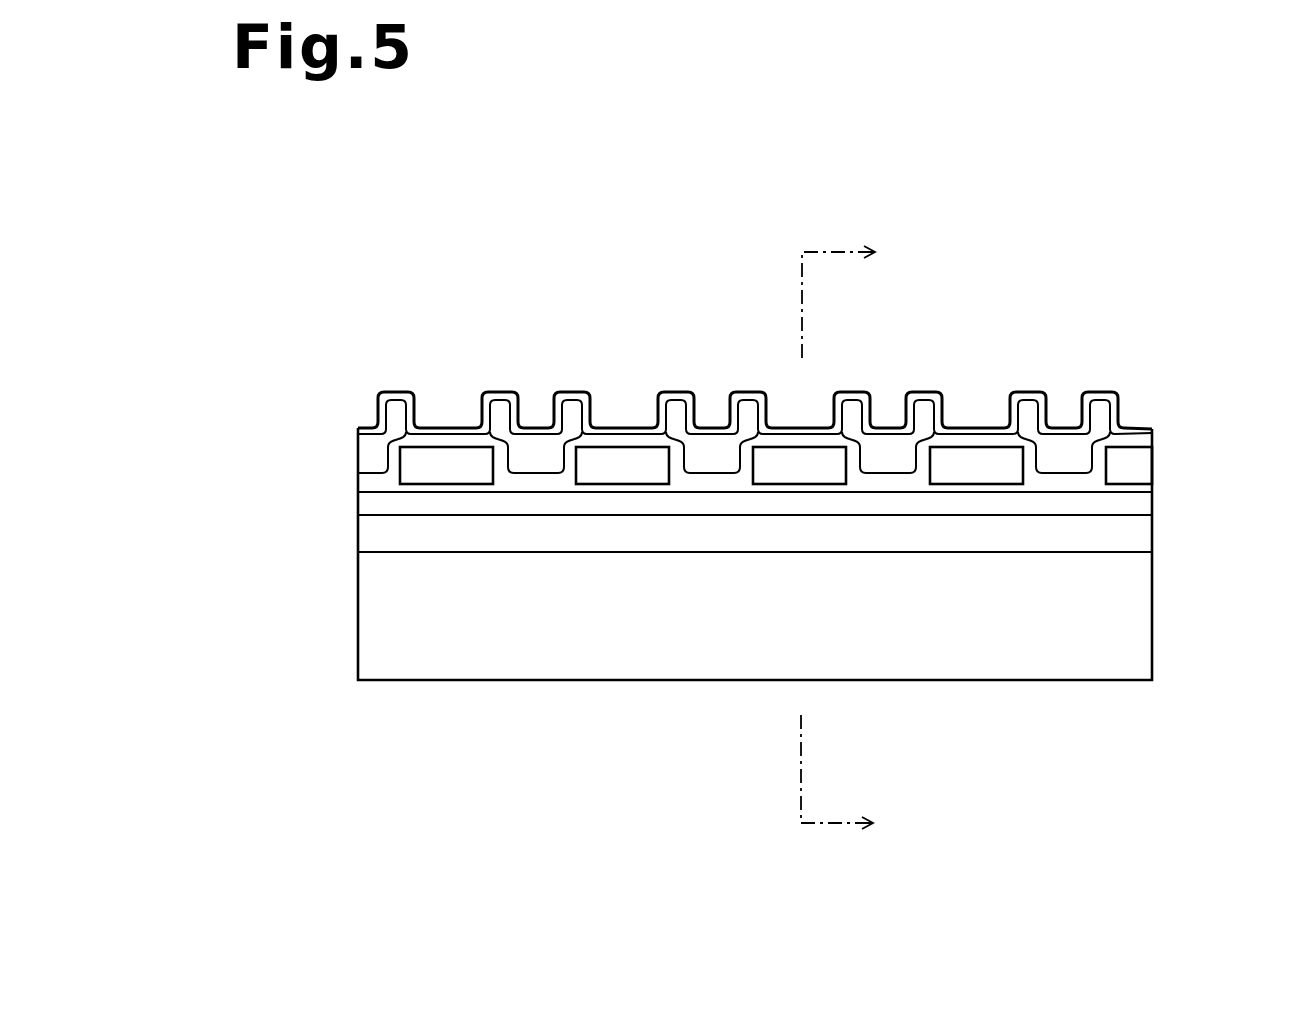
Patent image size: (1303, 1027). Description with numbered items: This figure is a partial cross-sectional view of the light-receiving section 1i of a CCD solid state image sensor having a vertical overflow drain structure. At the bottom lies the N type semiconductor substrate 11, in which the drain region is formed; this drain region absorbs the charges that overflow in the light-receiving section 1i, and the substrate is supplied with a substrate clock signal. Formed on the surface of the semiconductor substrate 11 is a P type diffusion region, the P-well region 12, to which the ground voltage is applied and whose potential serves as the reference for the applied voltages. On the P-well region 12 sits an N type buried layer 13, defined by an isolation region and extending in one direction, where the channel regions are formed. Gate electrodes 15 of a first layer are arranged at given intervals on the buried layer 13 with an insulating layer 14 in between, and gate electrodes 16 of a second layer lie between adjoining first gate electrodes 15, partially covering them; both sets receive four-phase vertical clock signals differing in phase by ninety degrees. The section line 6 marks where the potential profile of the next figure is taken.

The light-receiving section 1i is at (435, 293).
The line 6— 6 is at (851, 537).
The semiconductor substrate 11 is at (1132, 610).
The diffusion region (P-well region) 12 is at (1142, 533).
The diffusion layer (buried layer) 13 is at (1145, 502).
The insulating layer 14 is at (1153, 486).
The gate electrodes of a first layer 15 is at (613, 462).
The gate electrodes of a second layer 16 is at (522, 447).